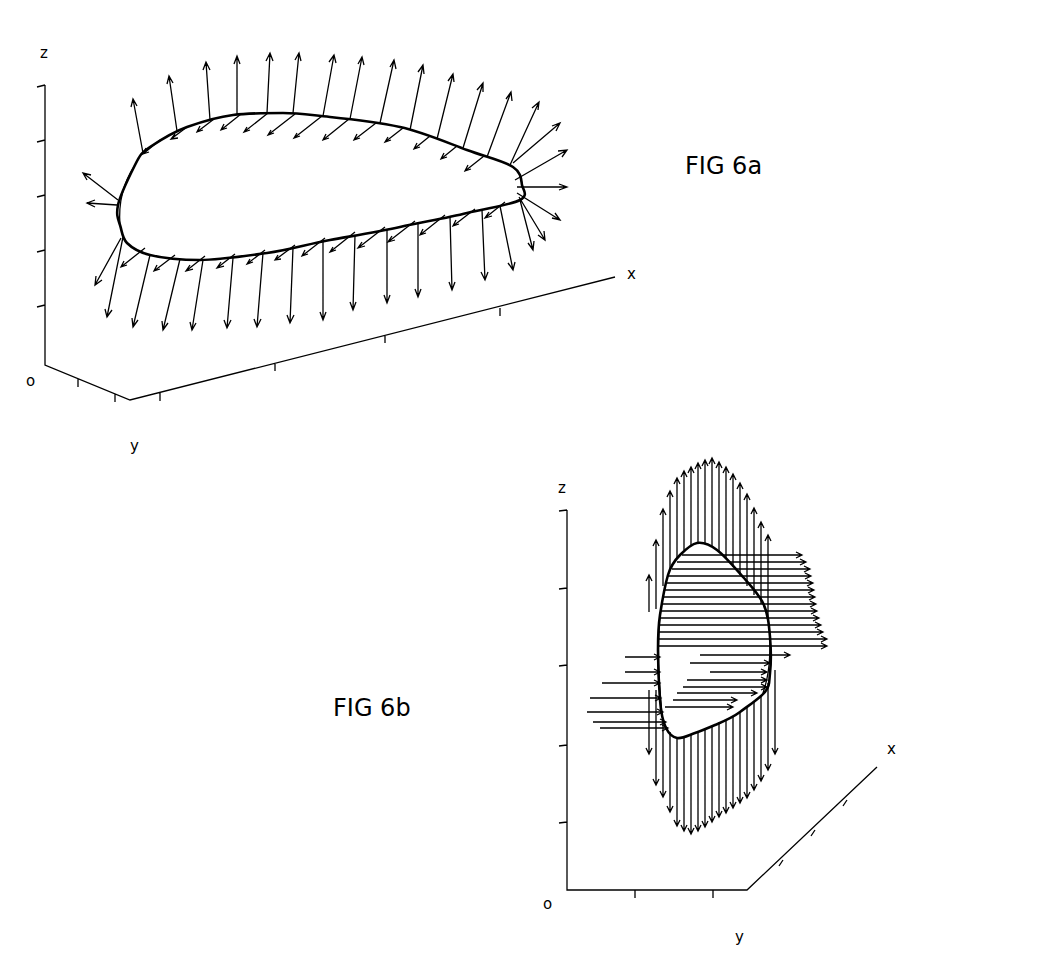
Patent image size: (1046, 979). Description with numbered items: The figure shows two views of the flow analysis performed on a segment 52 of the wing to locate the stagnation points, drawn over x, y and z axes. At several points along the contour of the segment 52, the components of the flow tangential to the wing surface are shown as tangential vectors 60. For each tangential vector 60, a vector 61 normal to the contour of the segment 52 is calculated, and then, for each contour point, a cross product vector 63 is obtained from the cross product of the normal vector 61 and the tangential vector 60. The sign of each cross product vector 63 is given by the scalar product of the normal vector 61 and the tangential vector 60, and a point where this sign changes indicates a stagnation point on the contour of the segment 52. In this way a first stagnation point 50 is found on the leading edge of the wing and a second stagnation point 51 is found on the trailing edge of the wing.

In FIG. 6a, the first stagnation point 50 is at (118, 220).
In FIG. 6b, the first stagnation point 50 is at (657, 668).
In FIG. 6a, the second stagnation point 51 is at (487, 153).
In FIG. 6b, the second stagnation point 51 is at (782, 634).
In FIG. 6a, the segment of the wing 52 is at (240, 205).
In FIG. 6b, the segment of the wing 52 is at (735, 653).
In FIG. 6a, the tangential vector 60 is at (284, 113).
In FIG. 6b, the tangential vector 60 is at (717, 497).
In FIG. 6a, the normal vector 61 is at (262, 80).
In FIG. 6b, the normal vector 61 is at (665, 600).
In FIG. 6a, the cross product vector 63 is at (288, 126).
In FIG. 6b, the cross product vector 63 is at (787, 552).